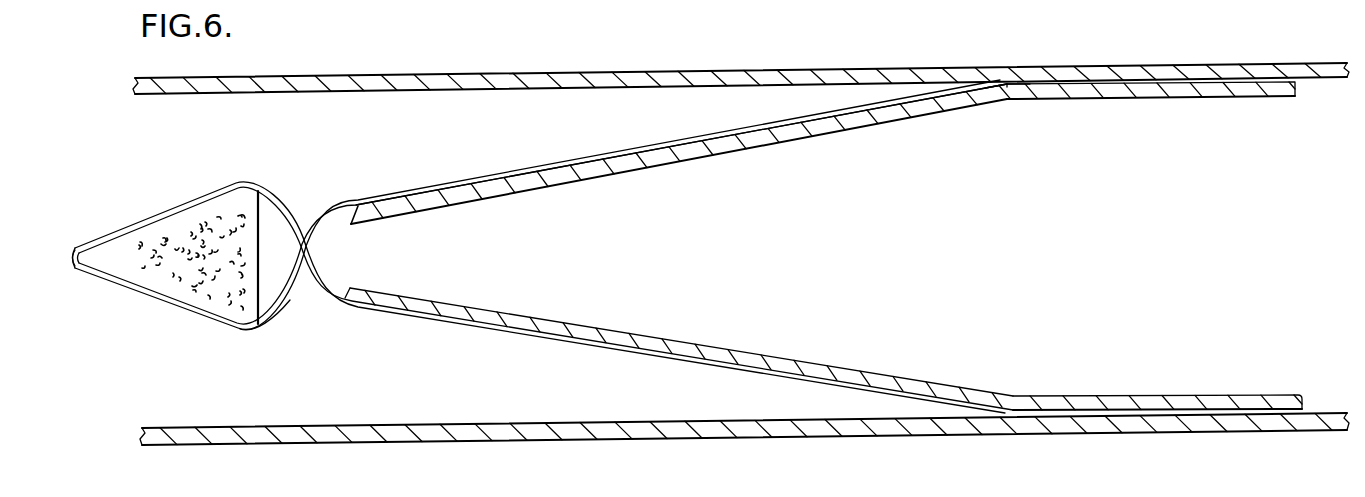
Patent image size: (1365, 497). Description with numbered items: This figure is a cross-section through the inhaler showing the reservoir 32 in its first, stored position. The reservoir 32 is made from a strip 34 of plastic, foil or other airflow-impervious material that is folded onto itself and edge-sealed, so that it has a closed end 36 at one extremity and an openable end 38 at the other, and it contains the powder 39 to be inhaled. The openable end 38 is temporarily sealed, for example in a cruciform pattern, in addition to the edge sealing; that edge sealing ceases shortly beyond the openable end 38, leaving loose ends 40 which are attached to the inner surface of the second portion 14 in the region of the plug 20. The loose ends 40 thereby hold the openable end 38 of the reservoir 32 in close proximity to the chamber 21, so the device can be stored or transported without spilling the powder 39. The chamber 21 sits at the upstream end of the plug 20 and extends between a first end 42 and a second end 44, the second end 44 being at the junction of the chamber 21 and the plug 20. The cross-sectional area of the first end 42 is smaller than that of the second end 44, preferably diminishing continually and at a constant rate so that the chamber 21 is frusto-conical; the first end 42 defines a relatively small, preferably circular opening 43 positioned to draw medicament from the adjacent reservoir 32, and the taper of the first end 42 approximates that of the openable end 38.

The second portion 14 is at (825, 438).
The plug 20 is at (1204, 78).
The chamber 21 is at (679, 150).
The reservoir 32 is at (278, 233).
The strip 34 is at (287, 312).
The closed end 36 is at (60, 257).
The openable end 38 is at (308, 226).
The powder 39 is at (175, 240).
The loose ends 40 is at (1119, 82).
The first end 42 is at (354, 213).
The opening 43 is at (376, 274).
The second end 44 is at (1011, 86).